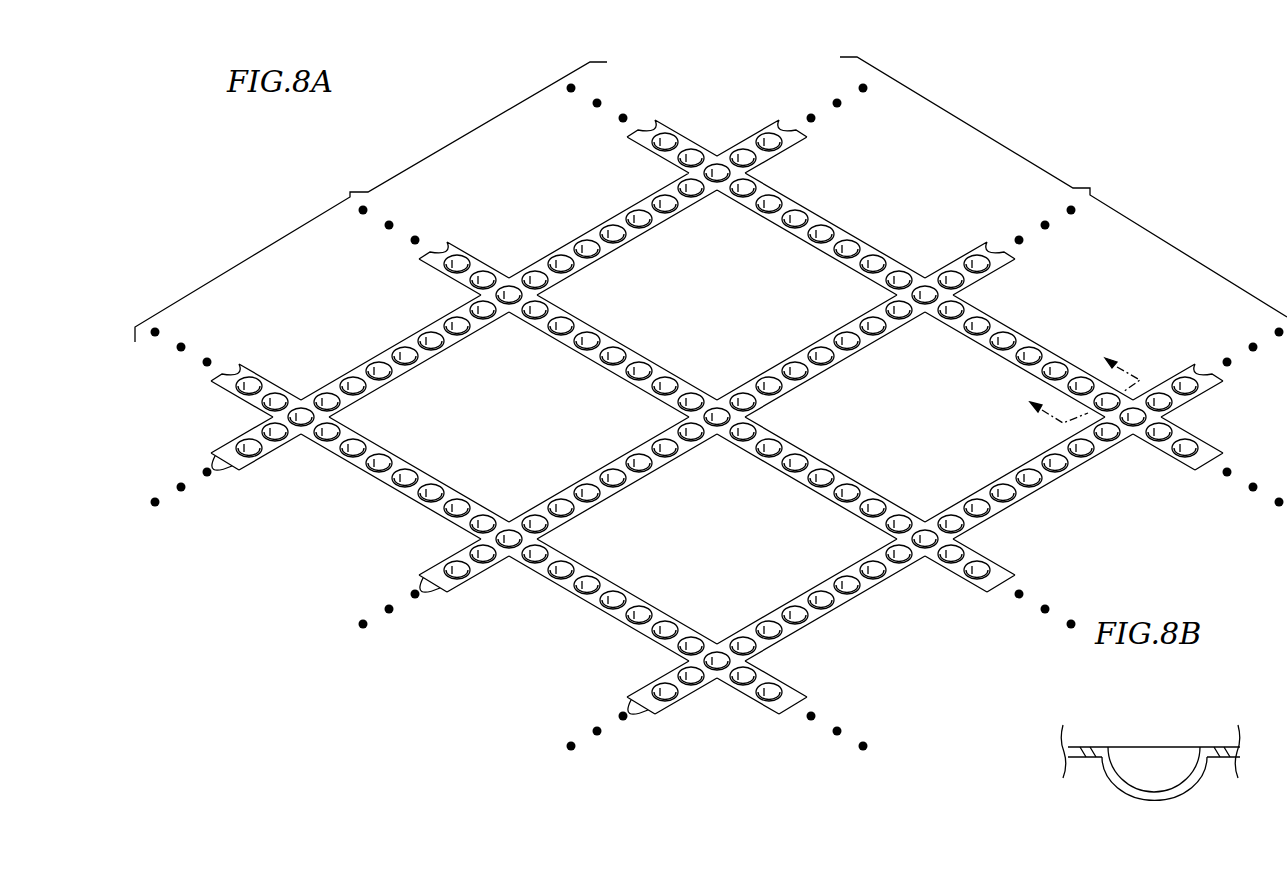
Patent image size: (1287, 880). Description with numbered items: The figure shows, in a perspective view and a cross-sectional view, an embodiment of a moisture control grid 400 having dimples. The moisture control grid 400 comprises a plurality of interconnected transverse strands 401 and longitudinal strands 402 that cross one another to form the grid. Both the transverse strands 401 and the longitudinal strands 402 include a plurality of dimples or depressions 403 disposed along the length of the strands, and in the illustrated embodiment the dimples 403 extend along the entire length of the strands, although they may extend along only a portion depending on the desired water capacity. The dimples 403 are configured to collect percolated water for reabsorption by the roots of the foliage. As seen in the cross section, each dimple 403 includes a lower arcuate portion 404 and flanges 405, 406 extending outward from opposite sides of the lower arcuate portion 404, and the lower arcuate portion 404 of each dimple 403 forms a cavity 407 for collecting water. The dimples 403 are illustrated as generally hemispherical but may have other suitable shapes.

In FIG. 8A, the moisture control grid 400 is at (1031, 92).
In FIG. 8A, the transverse strands 401 is at (1063, 187).
In FIG. 8A, the longitudinal strands 402 is at (371, 202).
In FIG. 8A, the dimples 403 is at (823, 232).
In FIG. 8B, the dimples 403 is at (1188, 712).
In FIG. 8B, the lower arcuate portion 404 is at (1154, 801).
In FIG. 8B, the flange 405 is at (1072, 777).
In FIG. 8B, the flange 406 is at (1228, 760).
In FIG. 8B, the cavity 407 is at (1136, 752).